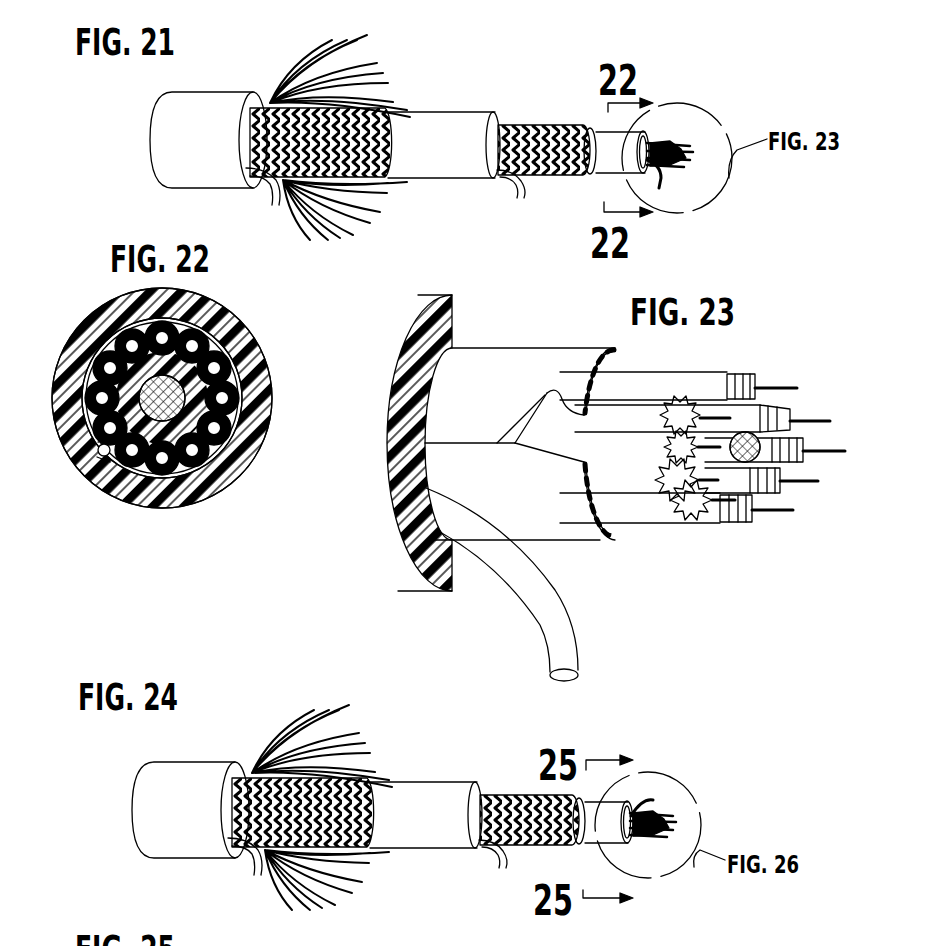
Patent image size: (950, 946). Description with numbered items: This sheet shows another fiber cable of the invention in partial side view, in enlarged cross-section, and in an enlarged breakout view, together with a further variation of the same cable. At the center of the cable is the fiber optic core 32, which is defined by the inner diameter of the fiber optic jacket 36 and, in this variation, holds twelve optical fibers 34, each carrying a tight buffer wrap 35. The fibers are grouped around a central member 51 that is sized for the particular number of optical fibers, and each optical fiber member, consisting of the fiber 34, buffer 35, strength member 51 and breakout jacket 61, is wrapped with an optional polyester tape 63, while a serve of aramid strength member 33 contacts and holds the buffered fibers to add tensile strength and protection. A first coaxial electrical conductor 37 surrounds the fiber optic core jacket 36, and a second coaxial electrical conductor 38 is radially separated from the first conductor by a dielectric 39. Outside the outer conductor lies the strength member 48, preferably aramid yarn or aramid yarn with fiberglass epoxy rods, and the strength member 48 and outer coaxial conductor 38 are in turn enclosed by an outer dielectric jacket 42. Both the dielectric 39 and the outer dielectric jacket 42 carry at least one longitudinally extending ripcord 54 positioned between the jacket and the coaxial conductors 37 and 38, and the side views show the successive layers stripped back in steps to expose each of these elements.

In FIG. 21, the fiber optic core 32 is at (127, 127).
In FIG. 24, the fiber optic core 32 is at (380, 800).
In FIG. 22, the strength member 33 is at (216, 446).
In FIG. 23, the strength member 33 is at (677, 505).
In FIG. 22, the optical fiber 34 is at (228, 393).
In FIG. 23, the optical fiber 34 is at (846, 453).
In FIG. 22, the buffer wrap 35 is at (237, 408).
In FIG. 23, the buffer wrap 35 is at (757, 382).
In FIG. 21, the jacket 36 is at (645, 128).
In FIG. 22, the jacket 36 is at (98, 308).
In FIG. 24, the jacket 36 is at (632, 786).
In FIG. 21, the first coaxial electrical conductor 37 is at (553, 125).
In FIG. 24, the first coaxial electrical conductor 37 is at (532, 788).
In FIG. 21, the second coaxial electrical conductor 38 is at (387, 180).
In FIG. 24, the second coaxial electrical conductor 38 is at (315, 847).
In FIG. 21, the dielectric 39 is at (467, 180).
In FIG. 24, the dielectric 39 is at (426, 849).
In FIG. 21, the outer dielectric jacket 42 is at (239, 92).
In FIG. 24, the outer dielectric jacket 42 is at (190, 777).
In FIG. 21, the strength member 48 is at (368, 58).
In FIG. 24, the strength member 48 is at (322, 790).
In FIG. 22, the central member 51 is at (197, 470).
In FIG. 23, the central member 51 is at (790, 422).
In FIG. 21, the ripcord 54 is at (276, 205).
In FIG. 22, the ripcord 54 is at (104, 456).
In FIG. 23, the ripcord 54 is at (533, 600).
In FIG. 24, the ripcord 54 is at (367, 884).
In FIG. 22, the breakout jacket 61 is at (237, 378).
In FIG. 23, the breakout jacket 61 is at (622, 478).
In FIG. 22, the polyester tape 63 is at (233, 347).
In FIG. 23, the polyester tape 63 is at (523, 348).